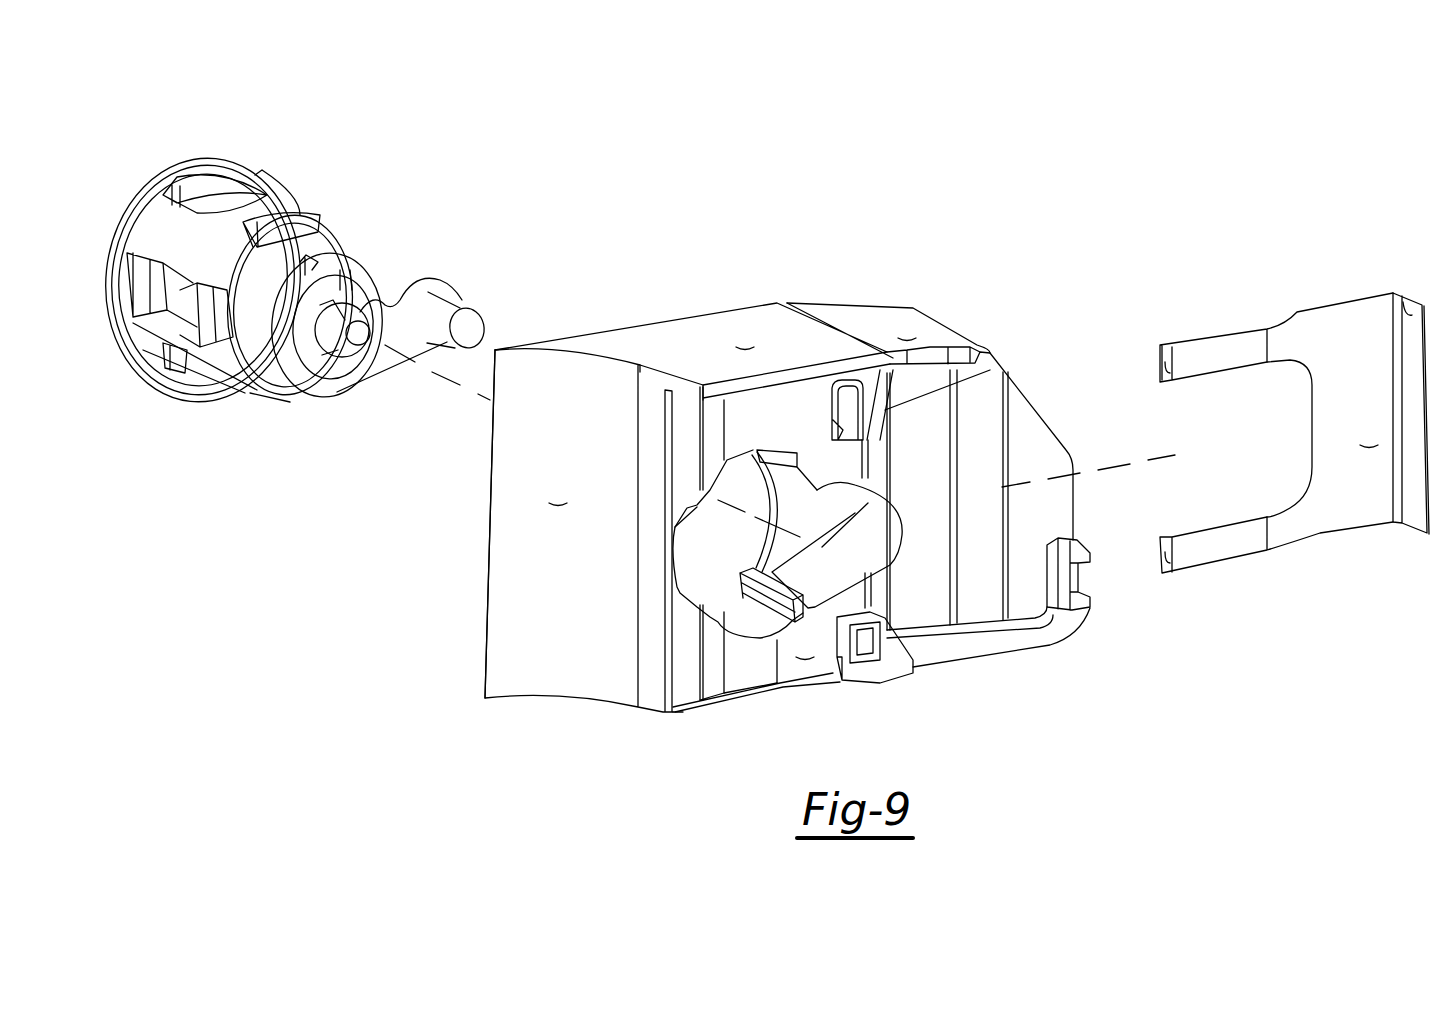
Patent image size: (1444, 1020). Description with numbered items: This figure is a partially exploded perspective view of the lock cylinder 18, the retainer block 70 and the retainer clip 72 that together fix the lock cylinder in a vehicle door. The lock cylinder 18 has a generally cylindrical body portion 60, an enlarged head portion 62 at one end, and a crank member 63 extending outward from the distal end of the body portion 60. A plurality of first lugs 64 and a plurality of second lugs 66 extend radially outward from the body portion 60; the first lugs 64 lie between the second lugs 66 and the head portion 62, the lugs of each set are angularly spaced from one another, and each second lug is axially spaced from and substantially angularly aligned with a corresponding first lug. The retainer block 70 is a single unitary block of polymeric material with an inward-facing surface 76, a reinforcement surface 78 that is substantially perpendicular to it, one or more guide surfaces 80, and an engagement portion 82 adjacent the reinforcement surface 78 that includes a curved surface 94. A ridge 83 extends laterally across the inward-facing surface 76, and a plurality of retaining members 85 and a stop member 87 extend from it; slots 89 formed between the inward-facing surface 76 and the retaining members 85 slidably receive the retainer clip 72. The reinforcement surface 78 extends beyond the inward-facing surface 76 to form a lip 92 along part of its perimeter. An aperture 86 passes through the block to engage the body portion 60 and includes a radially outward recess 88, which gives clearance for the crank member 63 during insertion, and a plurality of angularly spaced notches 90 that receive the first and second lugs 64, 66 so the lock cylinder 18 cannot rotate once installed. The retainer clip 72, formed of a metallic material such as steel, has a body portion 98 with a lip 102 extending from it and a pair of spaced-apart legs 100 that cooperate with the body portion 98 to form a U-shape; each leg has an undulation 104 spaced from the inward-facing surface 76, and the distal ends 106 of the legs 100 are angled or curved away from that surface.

The lock cylinder 18 is at (291, 268).
The body portion 60 is at (205, 363).
The head portion 62 is at (200, 160).
The crank member 63 is at (440, 298).
The first lugs 64 is at (228, 185).
The second lugs 66 is at (300, 212).
The retainer block 70 is at (795, 468).
The retainer clip 72 is at (1255, 400).
The inward-facing surface 76 is at (881, 541).
The reinforcement surface 78 is at (694, 351).
The guide surfaces 80 is at (930, 421).
The engagement portion 82 is at (538, 684).
The ridge 83 is at (717, 690).
The retaining members 85 is at (866, 437).
The aperture 86 is at (757, 502).
The stop member 87 is at (1087, 610).
The recess 88 is at (870, 533).
The slots 89 is at (843, 430).
The notches 90 is at (722, 620).
The lip 92 is at (692, 393).
The curved surface 94 is at (594, 530).
The body portion 98 is at (1394, 413).
The legs 100 is at (1251, 369).
The lip 102 is at (1410, 300).
The undulation 104 is at (1220, 365).
The distal ends 106 is at (1165, 372).